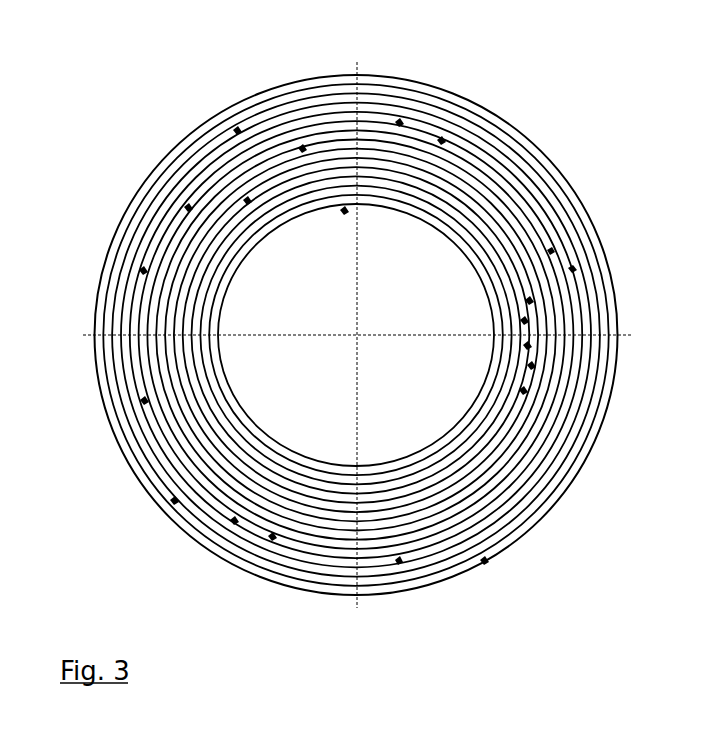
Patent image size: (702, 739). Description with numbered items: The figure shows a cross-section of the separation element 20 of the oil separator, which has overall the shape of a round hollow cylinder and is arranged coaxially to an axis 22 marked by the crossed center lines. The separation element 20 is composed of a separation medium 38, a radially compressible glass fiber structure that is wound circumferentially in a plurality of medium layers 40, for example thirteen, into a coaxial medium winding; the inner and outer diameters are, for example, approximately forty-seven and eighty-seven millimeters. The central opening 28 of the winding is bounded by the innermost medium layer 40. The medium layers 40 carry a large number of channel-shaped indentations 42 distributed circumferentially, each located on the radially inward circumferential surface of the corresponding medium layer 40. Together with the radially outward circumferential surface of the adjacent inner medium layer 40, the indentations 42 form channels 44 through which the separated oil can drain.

The separation element 20 is at (116, 110).
The axis 22 is at (357, 335).
The central opening / core hole 28 is at (409, 298).
The separation medium 38 is at (605, 408).
The medium layers 40 is at (607, 283).
The channel-shaped indentations 42 is at (575, 268).
The channels 44 is at (575, 266).